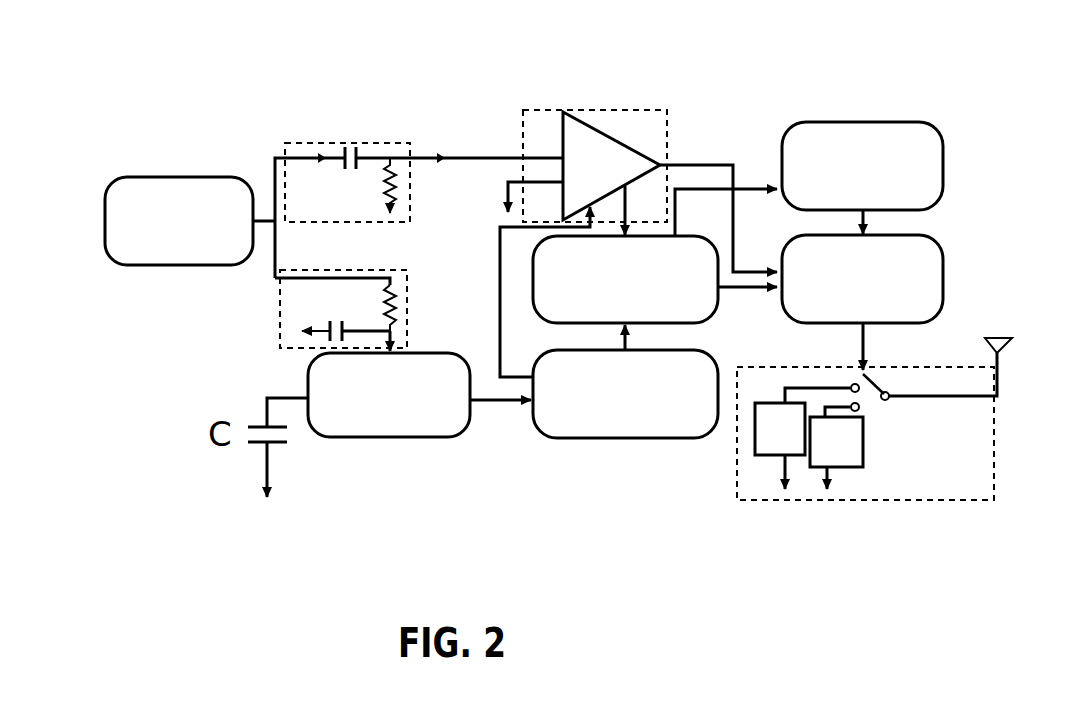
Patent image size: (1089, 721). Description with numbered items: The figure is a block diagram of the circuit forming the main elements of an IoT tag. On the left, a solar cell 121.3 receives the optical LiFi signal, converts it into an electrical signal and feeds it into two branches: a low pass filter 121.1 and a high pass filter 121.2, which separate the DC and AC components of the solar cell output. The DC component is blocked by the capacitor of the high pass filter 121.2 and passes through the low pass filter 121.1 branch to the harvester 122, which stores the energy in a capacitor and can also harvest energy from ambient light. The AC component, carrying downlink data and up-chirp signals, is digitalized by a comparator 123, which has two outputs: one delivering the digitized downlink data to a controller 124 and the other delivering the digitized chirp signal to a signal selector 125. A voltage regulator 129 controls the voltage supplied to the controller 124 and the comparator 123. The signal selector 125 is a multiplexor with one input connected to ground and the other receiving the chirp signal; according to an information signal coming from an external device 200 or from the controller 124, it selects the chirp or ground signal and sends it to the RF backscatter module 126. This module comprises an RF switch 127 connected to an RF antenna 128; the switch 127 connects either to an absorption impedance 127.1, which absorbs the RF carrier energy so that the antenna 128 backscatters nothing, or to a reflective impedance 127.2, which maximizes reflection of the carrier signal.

The low pass filter 121.1 is at (274, 332).
The high pass filter 121.2 is at (352, 134).
The solar cell 121.3 is at (190, 221).
The harvester 122 is at (419, 395).
The comparator 123 is at (616, 106).
The controller 124 is at (655, 279).
The signal selector 125 is at (862, 302).
The RF backscatter module 126 is at (902, 465).
The RF switch 127 is at (893, 397).
The absorption impedance 127.1 is at (802, 438).
The reflective impedance 127.2 is at (836, 448).
The RF antenna 128 is at (1010, 339).
The voltage regulator 129 is at (625, 381).
The external device 200 is at (862, 178).